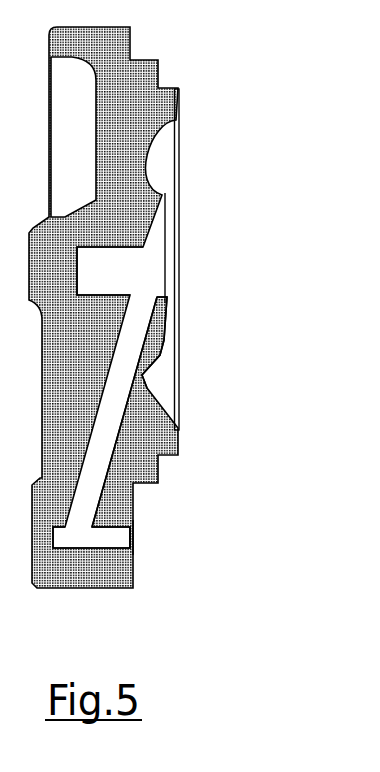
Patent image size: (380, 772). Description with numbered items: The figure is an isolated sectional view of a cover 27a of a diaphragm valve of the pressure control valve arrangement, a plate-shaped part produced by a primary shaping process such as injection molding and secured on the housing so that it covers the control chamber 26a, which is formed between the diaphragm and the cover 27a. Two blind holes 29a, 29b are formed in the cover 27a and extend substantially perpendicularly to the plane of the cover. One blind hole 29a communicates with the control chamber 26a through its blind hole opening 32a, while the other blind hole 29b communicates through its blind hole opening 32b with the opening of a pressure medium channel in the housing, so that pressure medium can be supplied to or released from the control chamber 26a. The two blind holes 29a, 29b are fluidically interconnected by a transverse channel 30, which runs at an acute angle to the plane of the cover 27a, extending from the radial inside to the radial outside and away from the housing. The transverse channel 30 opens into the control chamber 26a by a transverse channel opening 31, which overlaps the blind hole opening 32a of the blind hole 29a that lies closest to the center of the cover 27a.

The control chamber 26a is at (184, 307).
The cover 27a is at (178, 97).
The blind hole 29a is at (130, 270).
The blind hole 29b is at (107, 545).
The transverse channel 30 is at (122, 378).
The transverse channel opening 31 is at (183, 233).
The blind hole opening 32a is at (183, 288).
The blind hole opening 32b is at (138, 533).